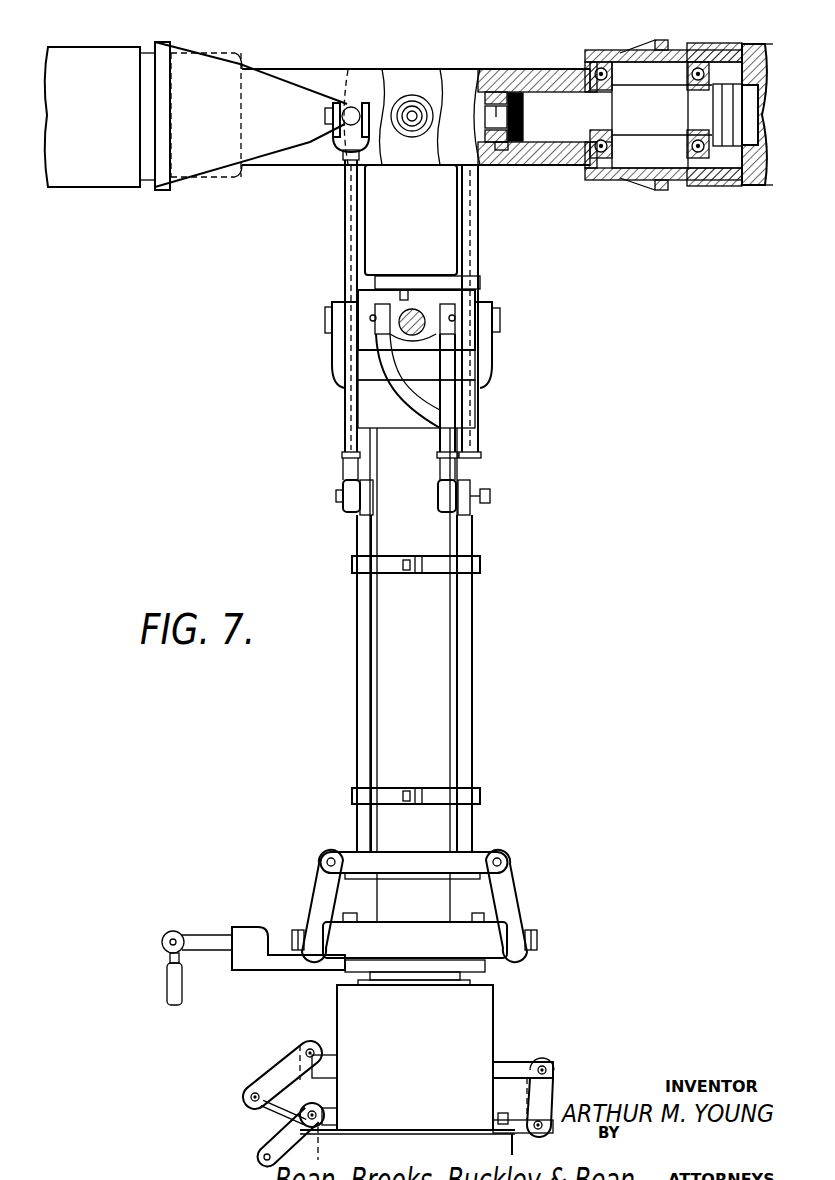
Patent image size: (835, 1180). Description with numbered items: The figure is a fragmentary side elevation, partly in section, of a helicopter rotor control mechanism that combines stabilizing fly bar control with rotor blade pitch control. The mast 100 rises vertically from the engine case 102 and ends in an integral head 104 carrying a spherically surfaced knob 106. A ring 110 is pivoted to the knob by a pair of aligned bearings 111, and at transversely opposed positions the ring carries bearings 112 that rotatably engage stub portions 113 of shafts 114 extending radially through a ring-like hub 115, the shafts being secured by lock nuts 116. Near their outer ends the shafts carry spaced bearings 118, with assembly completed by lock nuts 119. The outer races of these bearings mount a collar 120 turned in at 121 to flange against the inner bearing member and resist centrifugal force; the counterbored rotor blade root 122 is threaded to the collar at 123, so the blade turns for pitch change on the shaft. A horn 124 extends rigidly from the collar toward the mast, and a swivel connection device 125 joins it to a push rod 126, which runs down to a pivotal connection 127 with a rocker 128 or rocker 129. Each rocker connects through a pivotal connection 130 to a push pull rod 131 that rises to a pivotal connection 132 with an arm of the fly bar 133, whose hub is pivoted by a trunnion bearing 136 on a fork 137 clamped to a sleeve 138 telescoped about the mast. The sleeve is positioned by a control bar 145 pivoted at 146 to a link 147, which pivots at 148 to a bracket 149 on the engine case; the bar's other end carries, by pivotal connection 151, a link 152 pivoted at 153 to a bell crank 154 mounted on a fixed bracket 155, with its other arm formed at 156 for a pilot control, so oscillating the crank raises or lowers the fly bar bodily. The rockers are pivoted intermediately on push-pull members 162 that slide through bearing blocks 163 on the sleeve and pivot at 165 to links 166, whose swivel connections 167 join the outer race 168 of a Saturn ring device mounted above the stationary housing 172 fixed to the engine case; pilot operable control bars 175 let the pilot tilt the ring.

The mast 100 is at (443, 282).
The engine case 102 is at (407, 1144).
The head 104 is at (425, 237).
The knob 106 is at (453, 78).
The ring 110 is at (480, 88).
The bearings 111 is at (414, 98).
The bearings 112 is at (478, 97).
The stub portions 113 is at (500, 162).
The shafts 114 is at (548, 104).
The hub 115 is at (303, 73).
The lock nuts 116 is at (518, 150).
The bearings 118 is at (606, 62).
The lock nuts 119 is at (727, 128).
The collar 120 is at (150, 172).
The turned-in portion 121 is at (230, 180).
The rotor blade root 122 is at (100, 172).
The threaded connection 123 is at (725, 185).
The horn 124 is at (256, 88).
The swivel connection device 125 is at (342, 120).
The push rod 126 is at (348, 187).
The pivotal connection 127 is at (342, 495).
The rocker 128 is at (366, 498).
The rocker 129 is at (470, 481).
The pivotal connection 130 is at (484, 493).
The push pull rod 131 is at (446, 413).
The pivotal connection 132 is at (457, 318).
The fly bar 133 is at (402, 309).
The trunnion bearing 136 is at (325, 318).
The fork 137 is at (345, 403).
The sleeve 138 is at (443, 647).
The control bar 145 is at (515, 1069).
The pivot 146 is at (547, 1068).
The link 147 is at (552, 1092).
The pivot 148 is at (534, 1122).
The bracket 149 is at (500, 1127).
The pivotal connection 151 is at (308, 1046).
The link 152 is at (283, 1062).
The pivotal connection 153 is at (256, 1091).
The bell crank 154 is at (268, 1108).
The fixed bracket 155 is at (325, 1126).
The crank arm connection 156 is at (262, 1158).
The push-pull member 162 is at (363, 600).
The bearing blocks 163 is at (352, 562).
The pivotal engagement 165 is at (322, 860).
The link 166 is at (318, 897).
The swivel connection 167 is at (295, 931).
The outer race 168 is at (415, 936).
The stationary housing 172 is at (492, 988).
The control bar 175 is at (258, 963).